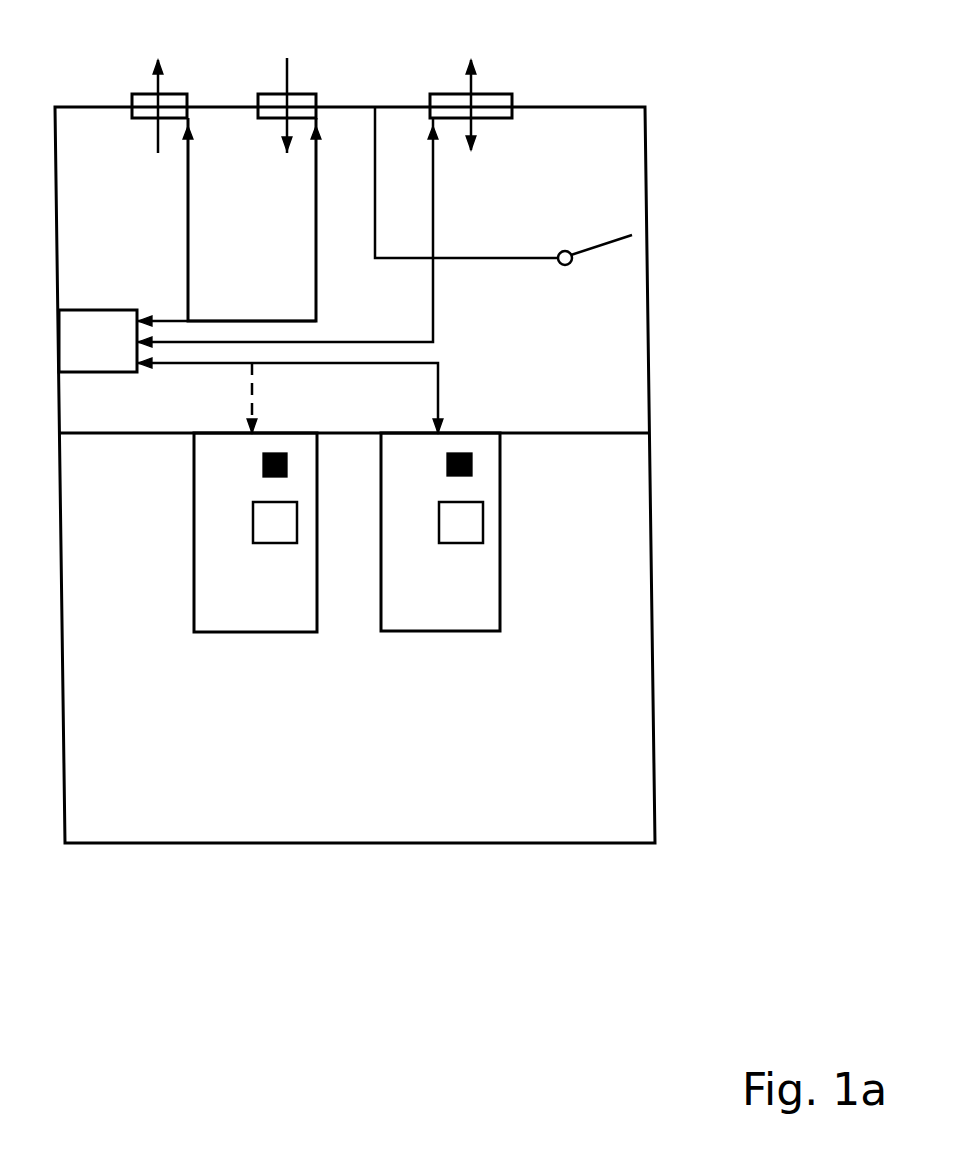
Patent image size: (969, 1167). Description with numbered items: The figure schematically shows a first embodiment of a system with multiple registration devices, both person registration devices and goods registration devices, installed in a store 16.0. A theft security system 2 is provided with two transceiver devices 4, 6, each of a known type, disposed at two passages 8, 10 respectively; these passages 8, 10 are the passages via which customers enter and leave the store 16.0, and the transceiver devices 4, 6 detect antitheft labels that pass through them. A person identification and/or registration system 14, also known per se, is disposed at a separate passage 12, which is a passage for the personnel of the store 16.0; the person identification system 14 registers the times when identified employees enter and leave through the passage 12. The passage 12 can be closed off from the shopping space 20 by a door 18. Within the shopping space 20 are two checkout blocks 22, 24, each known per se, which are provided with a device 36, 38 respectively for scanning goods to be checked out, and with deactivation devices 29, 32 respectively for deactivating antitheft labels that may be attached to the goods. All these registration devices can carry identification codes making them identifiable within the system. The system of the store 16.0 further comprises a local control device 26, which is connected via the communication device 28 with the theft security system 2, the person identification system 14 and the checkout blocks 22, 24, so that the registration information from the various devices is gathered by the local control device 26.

The theft security system 2 is at (242, 226).
The transceiver device 4 is at (178, 94).
The transceiver device 6 is at (307, 94).
The passage 8 is at (158, 140).
The passage 10 is at (287, 140).
The passage 12 is at (528, 223).
The person identification and/or registration system 14 is at (497, 94).
The store 16.0 is at (628, 819).
The door 18 is at (600, 252).
The shopping space 20 is at (228, 713).
The checkout block 22 is at (234, 616).
The checkout block 24 is at (421, 616).
The local control device 26 is at (120, 357).
The communication device 28 is at (189, 270).
The deactivation device 29 is at (263, 460).
The deactivation device 32 is at (472, 460).
The device for scanning goods 36 is at (253, 522).
The device for scanning goods 38 is at (483, 522).